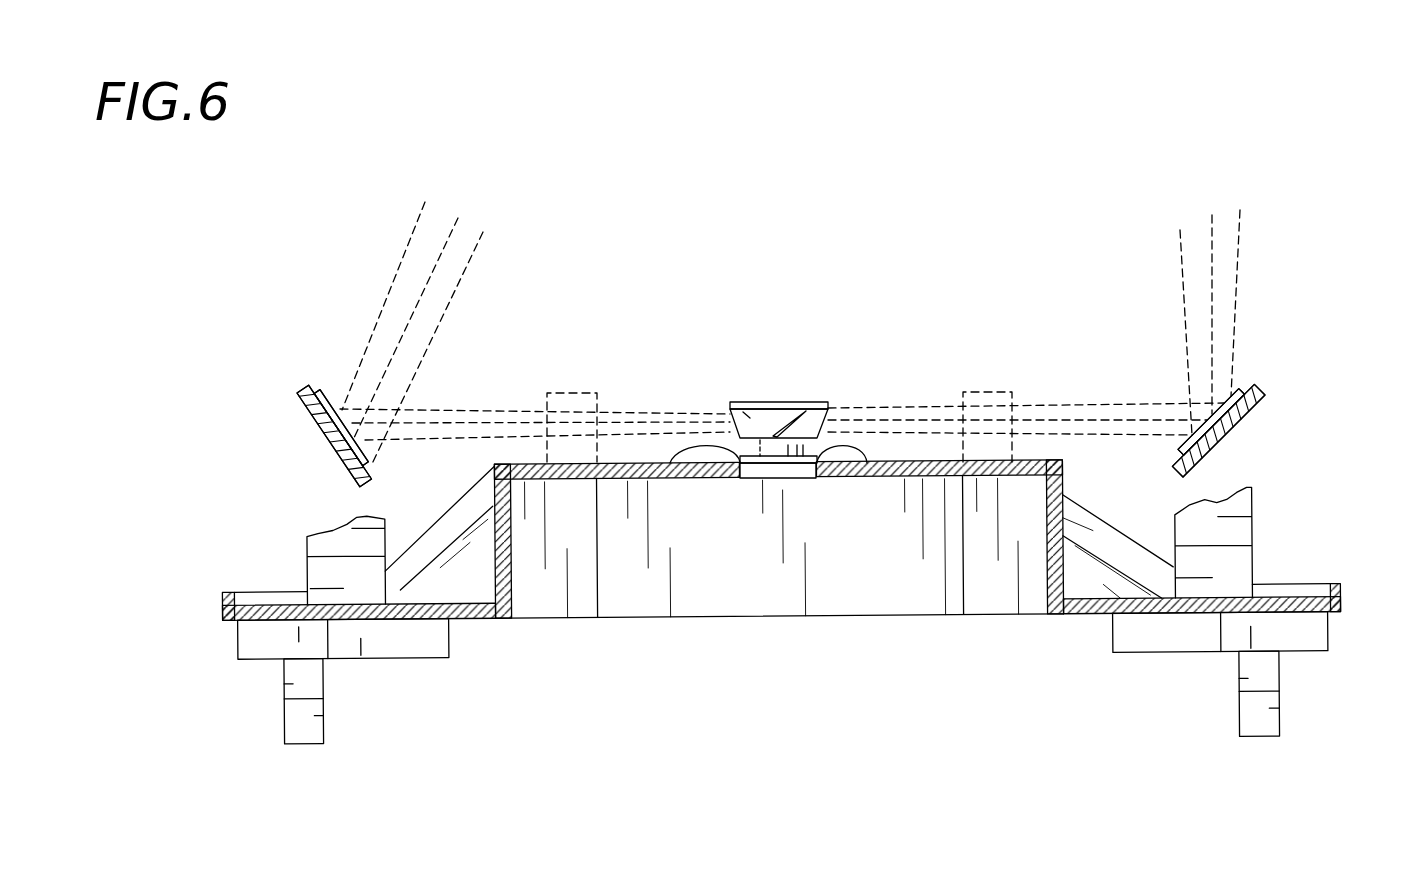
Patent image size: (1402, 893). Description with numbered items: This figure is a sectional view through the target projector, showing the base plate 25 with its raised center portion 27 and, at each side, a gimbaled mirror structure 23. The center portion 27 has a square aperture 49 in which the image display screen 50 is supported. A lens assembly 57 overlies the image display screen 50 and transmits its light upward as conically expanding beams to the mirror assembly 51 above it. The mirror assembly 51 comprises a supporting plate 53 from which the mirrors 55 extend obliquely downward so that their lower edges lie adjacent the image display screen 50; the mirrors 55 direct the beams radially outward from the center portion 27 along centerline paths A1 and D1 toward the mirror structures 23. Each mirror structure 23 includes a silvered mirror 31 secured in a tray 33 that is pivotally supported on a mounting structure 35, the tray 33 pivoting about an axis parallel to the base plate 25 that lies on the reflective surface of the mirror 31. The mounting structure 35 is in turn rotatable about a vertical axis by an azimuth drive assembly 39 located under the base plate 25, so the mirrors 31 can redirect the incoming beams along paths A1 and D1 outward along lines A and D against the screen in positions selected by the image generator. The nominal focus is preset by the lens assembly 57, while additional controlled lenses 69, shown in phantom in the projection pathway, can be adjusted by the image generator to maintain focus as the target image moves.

The mirror structure 23 is at (278, 358).
The base plate 25 is at (473, 618).
The center portion 27 is at (950, 477).
The silvered mirror 31 is at (337, 387).
The tray 33 is at (310, 432).
The mounting structure 35 is at (317, 578).
The azimuth drive assembly 39 is at (385, 652).
The square aperture 49 is at (782, 477).
The image display screen 50 is at (757, 477).
The mirror assembly 51 is at (807, 403).
The supporting plate 53 is at (763, 402).
The mirror 55 is at (737, 403).
The lens assembly 57 is at (653, 477).
The controlled lenses 69 is at (567, 393).
The incident light beam A is at (441, 250).
The centerline path A1 is at (460, 427).
The incident light beam D is at (1212, 262).
The centerline path D1 is at (1090, 420).